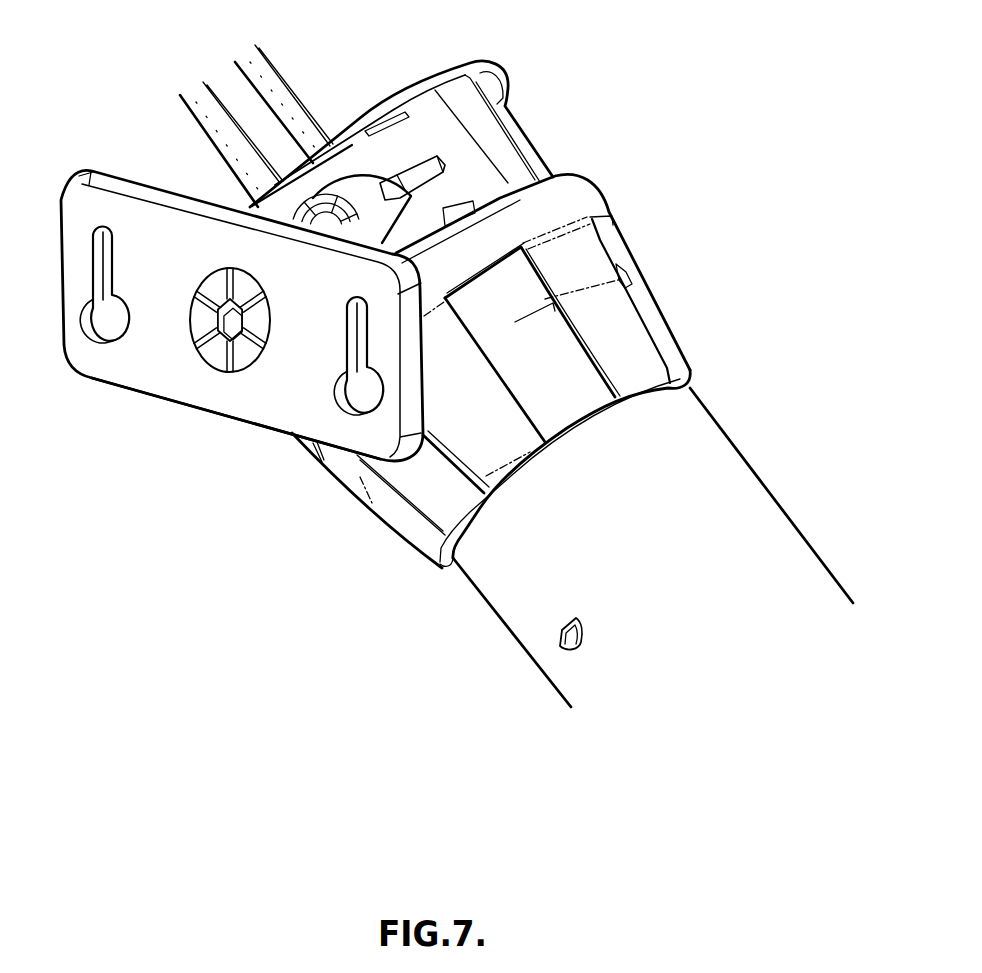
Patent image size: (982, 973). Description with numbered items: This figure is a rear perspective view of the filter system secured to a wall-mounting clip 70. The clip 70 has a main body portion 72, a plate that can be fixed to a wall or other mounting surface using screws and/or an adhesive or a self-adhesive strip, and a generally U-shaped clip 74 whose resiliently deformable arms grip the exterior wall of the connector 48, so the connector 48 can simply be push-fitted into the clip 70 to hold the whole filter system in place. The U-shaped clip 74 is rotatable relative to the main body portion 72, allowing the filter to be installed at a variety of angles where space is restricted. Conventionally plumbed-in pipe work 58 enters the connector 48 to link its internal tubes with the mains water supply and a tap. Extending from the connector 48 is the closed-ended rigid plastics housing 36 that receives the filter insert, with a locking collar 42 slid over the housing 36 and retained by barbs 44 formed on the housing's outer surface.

The housing 36 is at (688, 437).
The locking collar 42 is at (567, 212).
The barbs 44 is at (560, 648).
The connector 48 is at (379, 100).
The pipe work 58 is at (309, 112).
The clip 70 is at (140, 355).
The main body portion 72 is at (281, 413).
The U-shaped clip 74 is at (477, 140).